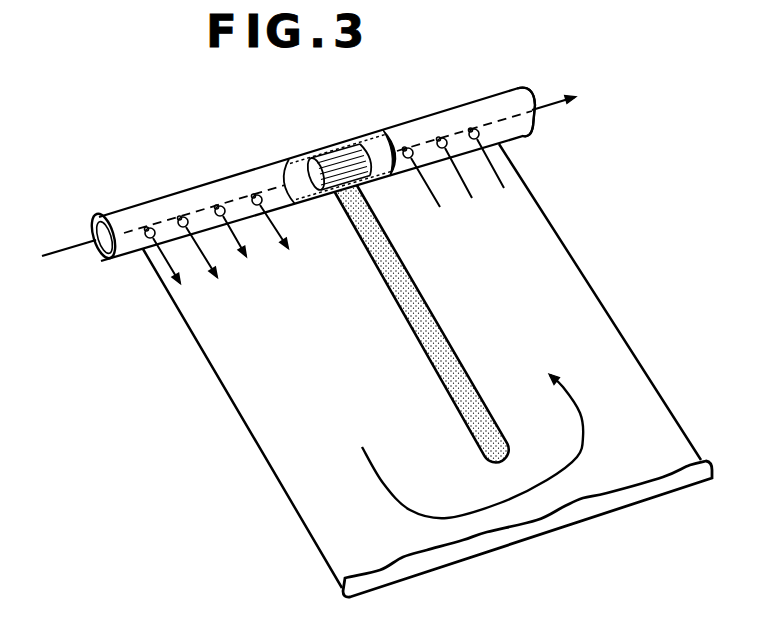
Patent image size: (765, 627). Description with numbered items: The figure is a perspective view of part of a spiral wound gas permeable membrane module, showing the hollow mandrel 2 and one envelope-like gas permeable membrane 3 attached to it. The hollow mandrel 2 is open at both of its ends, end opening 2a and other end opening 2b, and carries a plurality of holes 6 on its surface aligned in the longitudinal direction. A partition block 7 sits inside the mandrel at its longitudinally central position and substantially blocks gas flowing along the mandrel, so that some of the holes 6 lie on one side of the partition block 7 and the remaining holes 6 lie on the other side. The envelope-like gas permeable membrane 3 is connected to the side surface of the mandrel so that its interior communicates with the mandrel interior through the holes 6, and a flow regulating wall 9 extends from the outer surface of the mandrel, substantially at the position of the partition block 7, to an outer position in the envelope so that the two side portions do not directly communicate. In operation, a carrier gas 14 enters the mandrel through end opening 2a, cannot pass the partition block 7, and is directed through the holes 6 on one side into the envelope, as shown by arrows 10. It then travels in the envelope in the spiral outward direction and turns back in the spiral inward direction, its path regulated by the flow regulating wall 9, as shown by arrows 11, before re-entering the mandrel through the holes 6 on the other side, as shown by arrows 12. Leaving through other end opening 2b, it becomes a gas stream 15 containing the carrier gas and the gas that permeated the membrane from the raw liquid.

The hollow mandrel 2 is at (504, 95).
The end opening 2a is at (102, 255).
The other end opening 2b is at (536, 118).
The envelope-like gas permeable membrane 3 is at (577, 288).
The holes 6 is at (188, 215).
The partition block 7 is at (333, 158).
The flow regulating wall 9 is at (462, 380).
The arrows 10 is at (207, 278).
The arrows 11 is at (583, 440).
The arrows 12 is at (500, 176).
The carrier gas 14 is at (56, 255).
The gas stream 15 is at (570, 101).